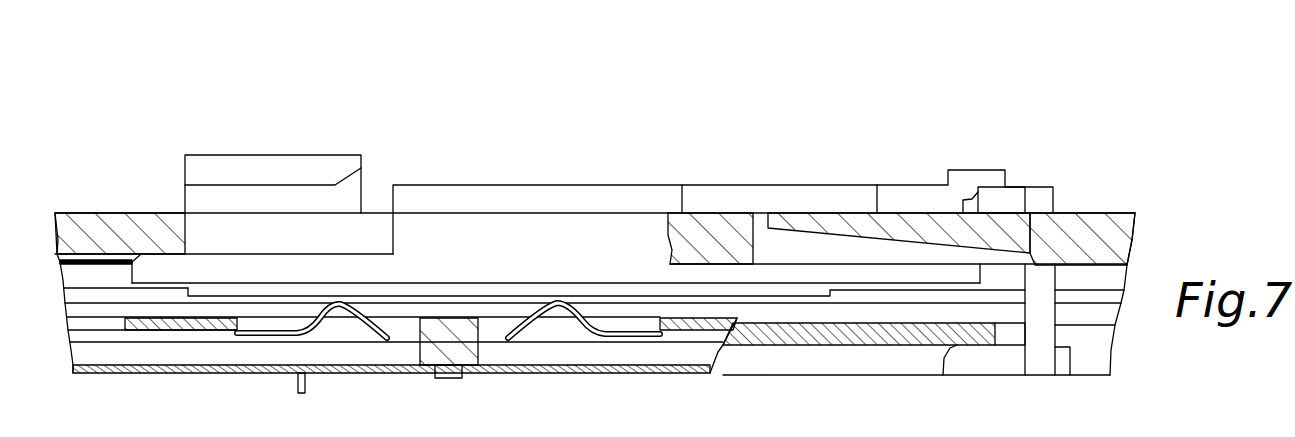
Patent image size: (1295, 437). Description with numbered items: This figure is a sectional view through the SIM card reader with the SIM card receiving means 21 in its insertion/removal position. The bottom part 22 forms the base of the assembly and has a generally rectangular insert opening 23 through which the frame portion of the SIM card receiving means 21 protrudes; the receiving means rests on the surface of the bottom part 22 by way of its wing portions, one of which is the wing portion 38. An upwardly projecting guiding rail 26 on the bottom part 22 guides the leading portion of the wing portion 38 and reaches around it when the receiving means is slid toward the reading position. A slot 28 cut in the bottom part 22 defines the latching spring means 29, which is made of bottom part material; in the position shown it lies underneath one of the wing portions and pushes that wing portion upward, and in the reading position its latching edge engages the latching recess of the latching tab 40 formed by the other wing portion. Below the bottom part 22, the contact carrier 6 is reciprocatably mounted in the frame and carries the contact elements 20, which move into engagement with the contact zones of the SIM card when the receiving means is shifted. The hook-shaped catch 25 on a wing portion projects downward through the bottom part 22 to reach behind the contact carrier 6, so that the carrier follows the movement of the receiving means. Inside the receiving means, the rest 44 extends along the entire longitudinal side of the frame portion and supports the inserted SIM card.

The contact carrier 6 is at (804, 354).
The contact elements 20 is at (597, 338).
The SIM card receiving means 21 is at (626, 176).
The bottom part 22 is at (1100, 222).
The insert opening 23 is at (188, 236).
The catch 25 is at (1018, 360).
The guiding rail 26 is at (262, 174).
The slot 28 is at (762, 222).
The latching spring means 29 is at (832, 222).
The wing portion 38 is at (511, 198).
The latching tab 40 is at (990, 180).
The rest 44 is at (407, 290).